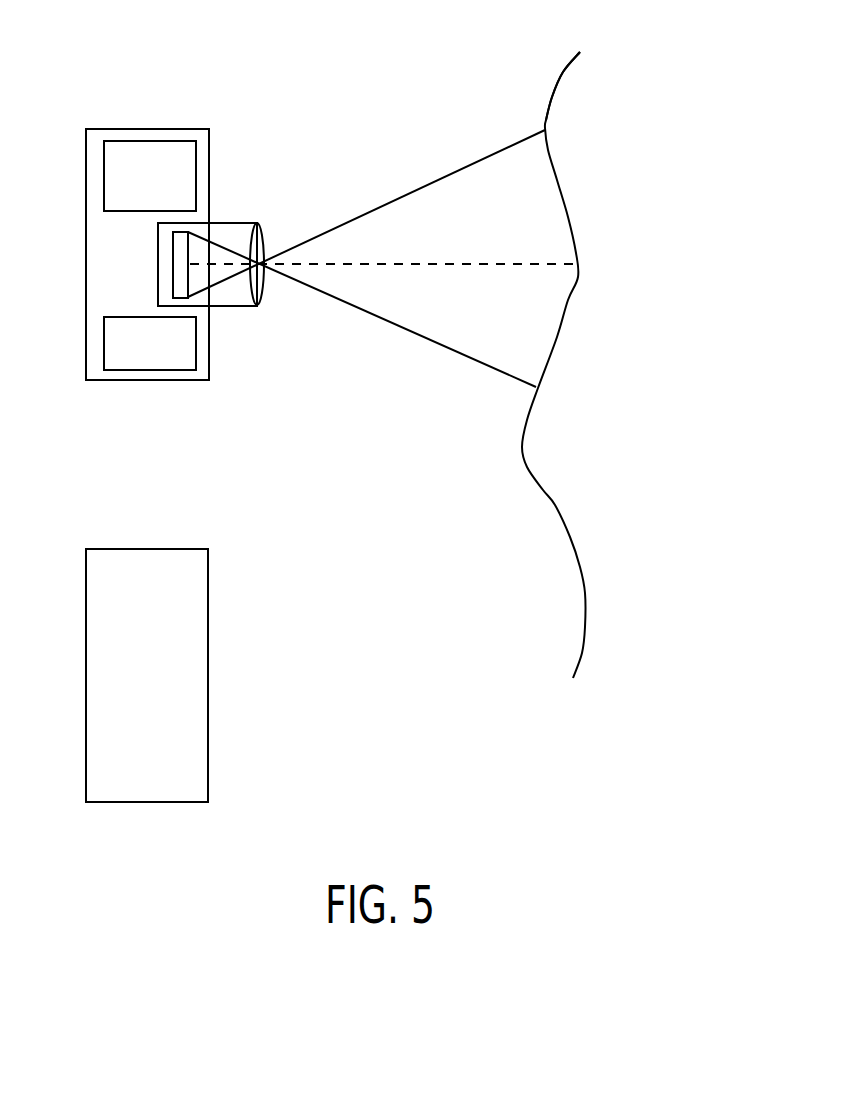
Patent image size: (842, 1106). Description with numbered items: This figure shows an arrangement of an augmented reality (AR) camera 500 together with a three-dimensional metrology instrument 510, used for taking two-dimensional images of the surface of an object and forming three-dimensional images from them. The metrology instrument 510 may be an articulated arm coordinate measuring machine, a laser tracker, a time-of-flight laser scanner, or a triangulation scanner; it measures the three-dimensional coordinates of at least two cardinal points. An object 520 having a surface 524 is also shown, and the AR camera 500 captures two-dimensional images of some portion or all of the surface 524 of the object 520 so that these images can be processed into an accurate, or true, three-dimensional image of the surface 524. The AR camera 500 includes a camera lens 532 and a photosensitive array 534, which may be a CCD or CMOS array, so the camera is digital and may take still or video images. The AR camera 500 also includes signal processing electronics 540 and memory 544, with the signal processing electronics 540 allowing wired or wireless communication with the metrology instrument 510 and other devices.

The augmented reality camera 500 is at (112, 129).
The 3D metrology instrument 510 is at (100, 549).
The object 520 is at (553, 503).
The surface 524 is at (555, 85).
The camera lens 532 is at (262, 232).
The photosensitive array 534 is at (182, 280).
The signal processing electronics 540 is at (175, 154).
The memory 544 is at (163, 360).